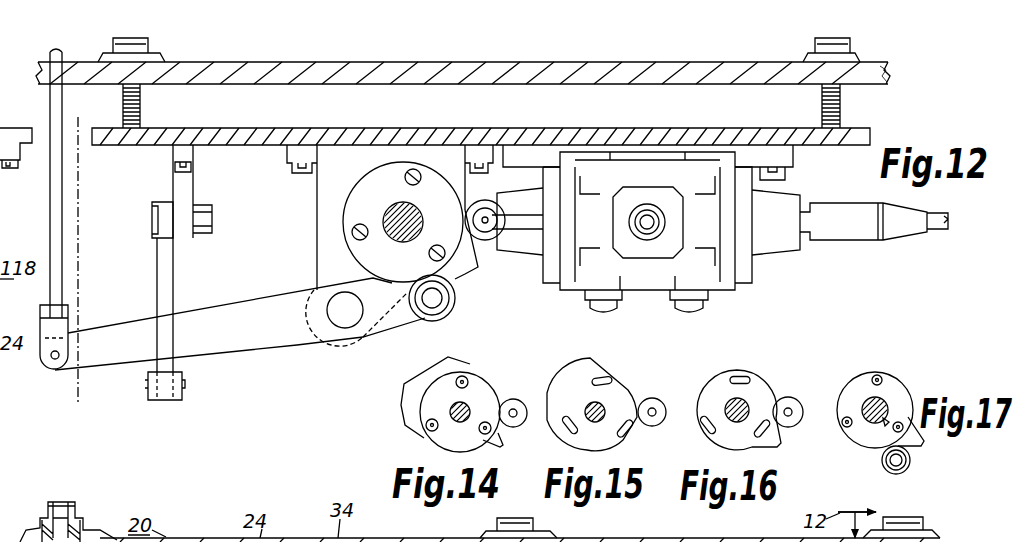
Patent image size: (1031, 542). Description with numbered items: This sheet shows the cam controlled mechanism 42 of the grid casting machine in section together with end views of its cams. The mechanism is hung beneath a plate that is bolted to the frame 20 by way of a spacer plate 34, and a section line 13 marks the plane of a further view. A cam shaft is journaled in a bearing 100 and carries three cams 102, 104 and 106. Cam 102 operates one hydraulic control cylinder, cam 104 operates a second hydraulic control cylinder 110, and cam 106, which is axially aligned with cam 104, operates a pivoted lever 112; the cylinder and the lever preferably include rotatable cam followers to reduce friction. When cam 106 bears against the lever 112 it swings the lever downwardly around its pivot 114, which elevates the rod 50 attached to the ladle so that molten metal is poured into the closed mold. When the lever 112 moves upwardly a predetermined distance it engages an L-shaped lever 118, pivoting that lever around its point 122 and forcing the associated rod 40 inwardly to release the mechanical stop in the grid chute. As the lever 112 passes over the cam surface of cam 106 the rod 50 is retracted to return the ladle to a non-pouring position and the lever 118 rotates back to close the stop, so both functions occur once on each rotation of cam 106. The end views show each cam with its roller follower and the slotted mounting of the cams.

In FIG. 12, the section line 13 is at (104, 117).
In FIG. 12, the frame 20 is at (890, 72).
In FIG. 12, the top plate 34 is at (637, 62).
In FIG. 12, the rod 40 is at (174, 402).
In FIG. 12, the cam controlled mechanism 42 is at (278, 223).
In FIG. 12, the rod 50 is at (50, 104).
In FIG. 12, the bearing 100 is at (317, 268).
In FIG. 14, the cam 102 is at (405, 386).
In FIG. 15, the cam 102 is at (611, 375).
In FIG. 12, the cam 104 is at (467, 273).
In FIG. 14, the cam 104 is at (504, 442).
In FIG. 16, the cam 104 is at (769, 374).
In FIG. 17, the cam 106 is at (888, 372).
In FIG. 12, the second hydraulic control cylinder 110 is at (720, 288).
In FIG. 12, the pivoted lever 112 is at (298, 344).
In FIG. 12, the pivot 114 is at (345, 328).
In FIG. 12, the L-shaped lever 118 is at (157, 280).
In FIG. 12, the pivot point 122 is at (152, 220).